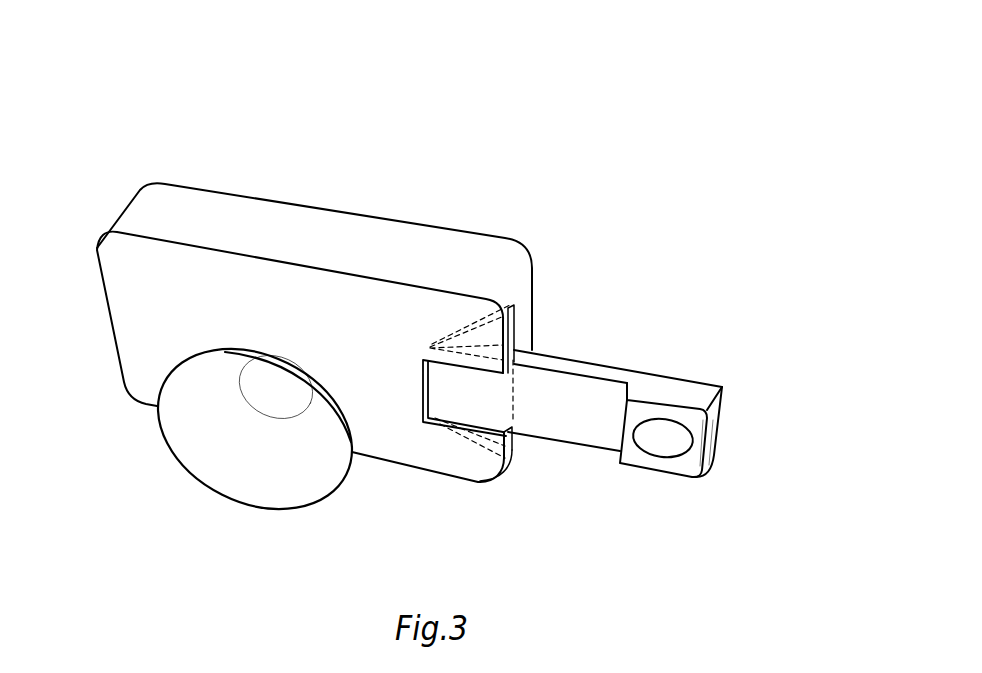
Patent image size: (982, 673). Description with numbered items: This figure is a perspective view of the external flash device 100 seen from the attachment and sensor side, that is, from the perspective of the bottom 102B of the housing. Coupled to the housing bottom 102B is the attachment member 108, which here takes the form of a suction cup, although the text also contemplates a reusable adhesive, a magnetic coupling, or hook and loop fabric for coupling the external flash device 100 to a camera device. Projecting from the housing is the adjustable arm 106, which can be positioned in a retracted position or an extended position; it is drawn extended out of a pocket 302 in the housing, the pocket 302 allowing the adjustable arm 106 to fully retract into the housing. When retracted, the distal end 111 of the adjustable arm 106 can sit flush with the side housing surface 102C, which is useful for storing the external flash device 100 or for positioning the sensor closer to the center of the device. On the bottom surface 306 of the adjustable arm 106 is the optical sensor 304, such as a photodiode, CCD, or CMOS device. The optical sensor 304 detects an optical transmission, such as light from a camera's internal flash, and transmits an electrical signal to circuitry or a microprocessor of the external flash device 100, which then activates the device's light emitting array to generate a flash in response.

The external flash device 100 is at (718, 52).
The bottom of the housing 102B is at (228, 312).
The side housing surface 102C is at (157, 196).
The adjustable arm 106 is at (693, 380).
The attachment member 108 is at (238, 485).
The distal end of the adjustable arm 111 is at (720, 427).
The pocket 302 is at (432, 414).
The optical sensor 304 is at (667, 452).
The bottom surface of the adjustable arm 306 is at (638, 417).